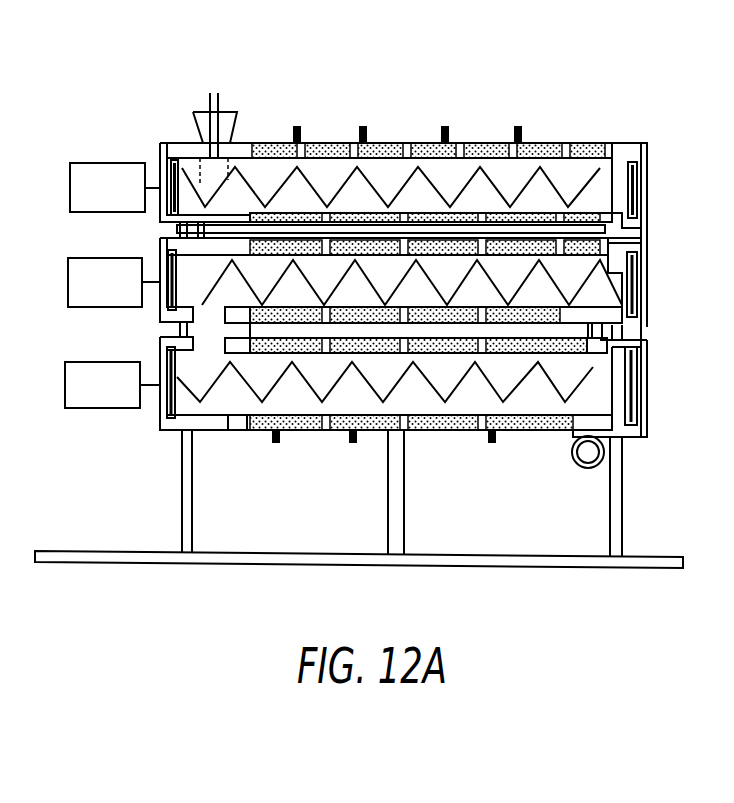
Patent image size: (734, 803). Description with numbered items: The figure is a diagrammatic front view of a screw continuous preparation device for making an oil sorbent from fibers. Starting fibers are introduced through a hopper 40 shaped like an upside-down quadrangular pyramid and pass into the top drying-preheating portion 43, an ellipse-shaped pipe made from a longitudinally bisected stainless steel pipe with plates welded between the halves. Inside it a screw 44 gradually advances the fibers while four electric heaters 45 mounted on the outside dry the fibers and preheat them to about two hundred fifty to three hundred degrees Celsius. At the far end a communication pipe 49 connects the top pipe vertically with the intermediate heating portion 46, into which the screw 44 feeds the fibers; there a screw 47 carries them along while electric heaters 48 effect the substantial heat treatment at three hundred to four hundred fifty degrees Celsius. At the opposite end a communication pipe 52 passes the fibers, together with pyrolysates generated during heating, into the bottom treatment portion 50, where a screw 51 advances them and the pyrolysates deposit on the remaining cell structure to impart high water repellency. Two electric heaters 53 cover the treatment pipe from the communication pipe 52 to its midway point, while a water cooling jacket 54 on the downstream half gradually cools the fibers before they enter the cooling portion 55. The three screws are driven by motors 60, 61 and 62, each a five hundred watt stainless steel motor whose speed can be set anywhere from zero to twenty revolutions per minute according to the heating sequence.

The hopper 40 is at (193, 112).
The drying-preheating portion 43 is at (622, 178).
The screw 44 is at (406, 150).
The electric heaters 45 is at (262, 215).
The heating portion 46 is at (618, 270).
The screw 47 is at (417, 290).
The electric heaters 48 is at (368, 240).
The communication pipe 49 is at (590, 237).
The treatment portion 50 is at (613, 378).
The screw 51 is at (408, 395).
The communication pipe 52 is at (205, 330).
The electric heaters 53 is at (255, 430).
The water cooling jacket 54 is at (532, 433).
The cooling portion 55 is at (586, 468).
The motor 60 is at (115, 187).
The motor 61 is at (114, 282).
The motor 62 is at (112, 385).